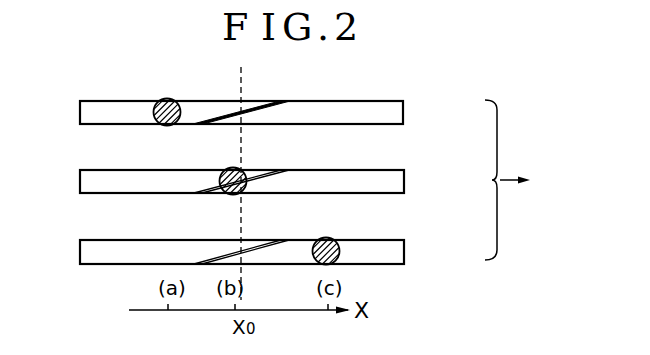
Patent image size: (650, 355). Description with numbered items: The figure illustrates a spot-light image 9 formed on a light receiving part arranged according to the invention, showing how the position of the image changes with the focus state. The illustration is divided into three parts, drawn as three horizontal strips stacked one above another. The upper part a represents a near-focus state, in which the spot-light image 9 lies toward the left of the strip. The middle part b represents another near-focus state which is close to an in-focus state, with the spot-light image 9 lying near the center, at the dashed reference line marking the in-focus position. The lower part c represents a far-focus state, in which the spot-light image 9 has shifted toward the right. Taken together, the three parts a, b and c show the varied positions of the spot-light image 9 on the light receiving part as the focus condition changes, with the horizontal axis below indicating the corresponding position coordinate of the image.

The spot-light image 9 is at (167, 126).
The near-focus state a is at (279, 113).
The near-focus state close to in-focus b is at (279, 181).
The far-focus state c is at (278, 252).